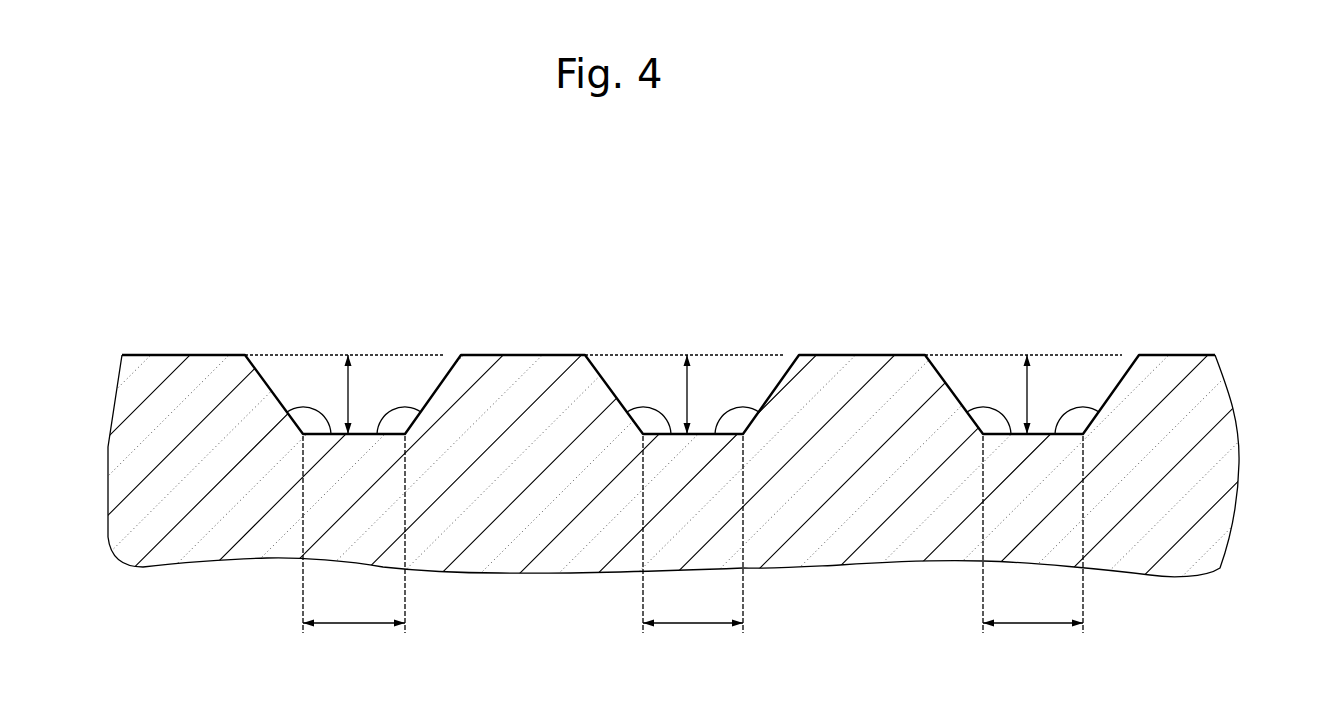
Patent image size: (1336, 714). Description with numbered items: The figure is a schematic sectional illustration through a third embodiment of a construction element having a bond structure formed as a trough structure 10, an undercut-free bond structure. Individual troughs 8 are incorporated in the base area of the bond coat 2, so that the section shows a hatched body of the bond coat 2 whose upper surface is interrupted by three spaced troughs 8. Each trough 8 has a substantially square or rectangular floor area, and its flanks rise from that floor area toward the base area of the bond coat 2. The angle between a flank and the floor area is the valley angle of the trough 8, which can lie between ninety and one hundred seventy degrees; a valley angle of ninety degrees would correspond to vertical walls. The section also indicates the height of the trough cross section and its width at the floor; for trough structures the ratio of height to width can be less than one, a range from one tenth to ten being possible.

The bond coat 2 is at (1213, 476).
The trough 8 is at (668, 494).
The profile structure 10 is at (668, 408).